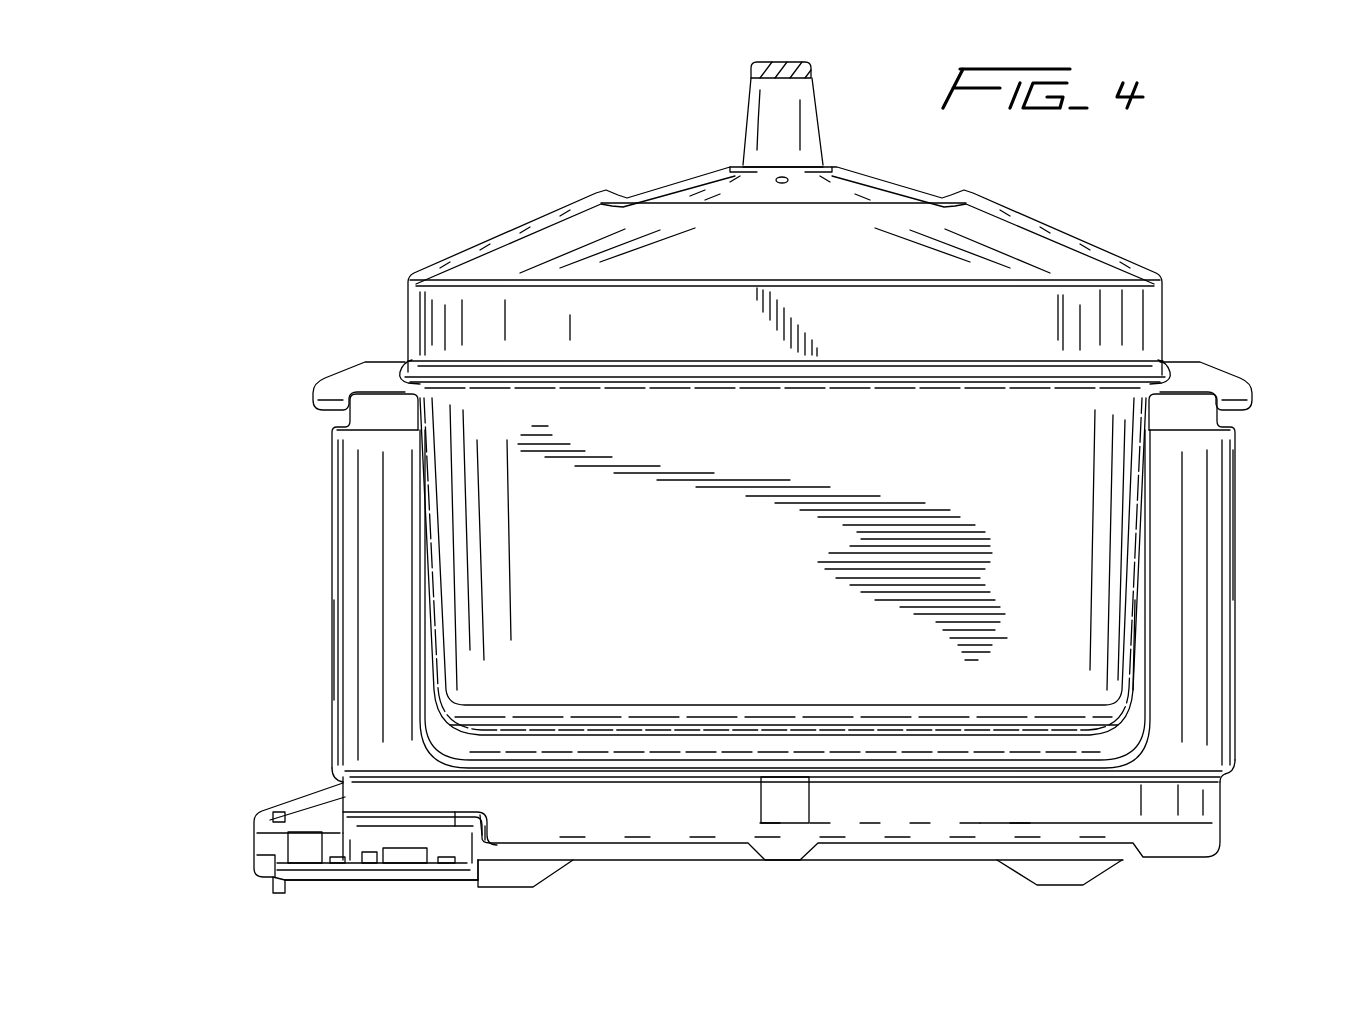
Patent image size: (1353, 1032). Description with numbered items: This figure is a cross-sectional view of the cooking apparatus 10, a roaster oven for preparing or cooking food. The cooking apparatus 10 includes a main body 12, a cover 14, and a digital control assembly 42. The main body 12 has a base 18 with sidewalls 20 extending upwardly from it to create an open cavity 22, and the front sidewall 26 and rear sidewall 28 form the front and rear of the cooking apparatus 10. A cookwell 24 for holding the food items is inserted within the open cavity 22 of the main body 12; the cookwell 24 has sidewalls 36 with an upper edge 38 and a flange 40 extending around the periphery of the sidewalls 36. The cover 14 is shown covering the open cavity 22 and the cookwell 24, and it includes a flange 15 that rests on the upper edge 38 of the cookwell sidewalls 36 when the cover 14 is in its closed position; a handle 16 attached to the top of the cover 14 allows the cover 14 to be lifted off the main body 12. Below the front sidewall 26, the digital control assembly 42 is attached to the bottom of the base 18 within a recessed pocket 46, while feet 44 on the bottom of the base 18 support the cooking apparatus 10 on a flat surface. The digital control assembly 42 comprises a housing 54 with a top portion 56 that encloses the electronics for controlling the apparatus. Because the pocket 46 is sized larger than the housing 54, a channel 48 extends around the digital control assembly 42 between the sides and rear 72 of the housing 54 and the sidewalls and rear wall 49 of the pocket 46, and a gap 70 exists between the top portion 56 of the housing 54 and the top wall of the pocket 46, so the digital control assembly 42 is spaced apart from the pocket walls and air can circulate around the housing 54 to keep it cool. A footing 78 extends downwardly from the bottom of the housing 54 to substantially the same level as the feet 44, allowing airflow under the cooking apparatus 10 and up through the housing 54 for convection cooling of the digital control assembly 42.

The cooking apparatus 10 is at (508, 160).
The main body 12 is at (330, 493).
The cover 14 is at (1013, 212).
The flange 15 is at (432, 371).
The handle 16 is at (752, 90).
The base 18 is at (1193, 807).
The sidewalls 20 is at (1210, 578).
The open cavity 22 is at (762, 543).
The cookwell 24 is at (1133, 630).
The front sidewall 26 is at (332, 596).
The rear sidewall 28 is at (1236, 485).
The cookwell sidewalls 36 is at (445, 567).
The upper edge 38 is at (392, 372).
The flange 40 is at (352, 365).
The digital control assembly 42 is at (246, 812).
The feet 44 is at (540, 870).
The recessed pocket 46 is at (460, 800).
The channel 48 is at (487, 828).
The rear wall 49 is at (490, 823).
The housing 54 is at (305, 881).
The top portion 56 is at (365, 812).
The gap 70 is at (402, 863).
The rear 72 is at (465, 848).
The footing 78 is at (278, 893).